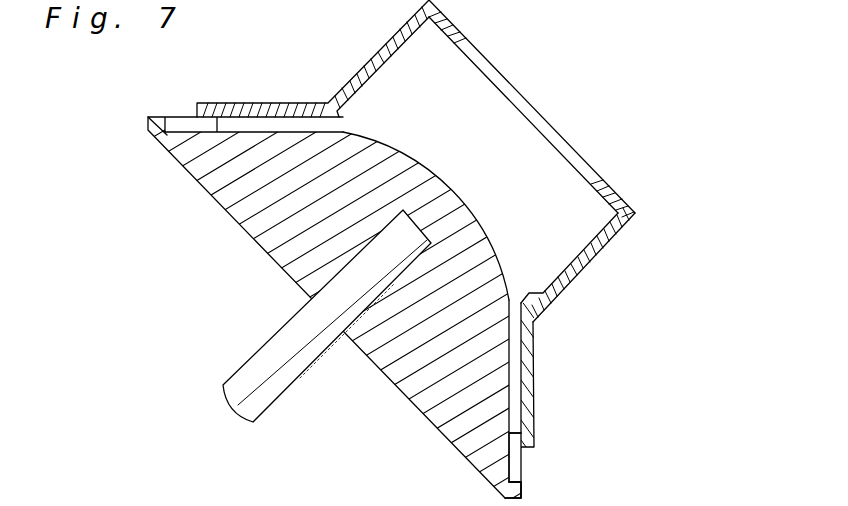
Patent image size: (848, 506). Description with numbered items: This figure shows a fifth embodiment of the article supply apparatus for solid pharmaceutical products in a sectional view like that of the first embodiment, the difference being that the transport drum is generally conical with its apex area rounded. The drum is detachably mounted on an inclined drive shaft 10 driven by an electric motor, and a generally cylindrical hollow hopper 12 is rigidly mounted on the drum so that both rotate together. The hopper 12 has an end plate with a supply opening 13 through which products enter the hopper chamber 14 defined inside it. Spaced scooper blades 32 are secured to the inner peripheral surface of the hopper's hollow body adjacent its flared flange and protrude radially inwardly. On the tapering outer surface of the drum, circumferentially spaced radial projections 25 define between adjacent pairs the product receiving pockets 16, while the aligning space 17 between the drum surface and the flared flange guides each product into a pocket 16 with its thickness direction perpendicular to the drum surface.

The drive shaft 10 is at (296, 376).
The hopper 12 is at (568, 282).
The supply opening 13 is at (513, 95).
The hopper chamber 14 is at (553, 218).
The product receiving pocket 16 is at (513, 452).
The aligning space 17 is at (514, 365).
The radial projection 25 is at (513, 473).
The scooper blade 32 is at (343, 98).